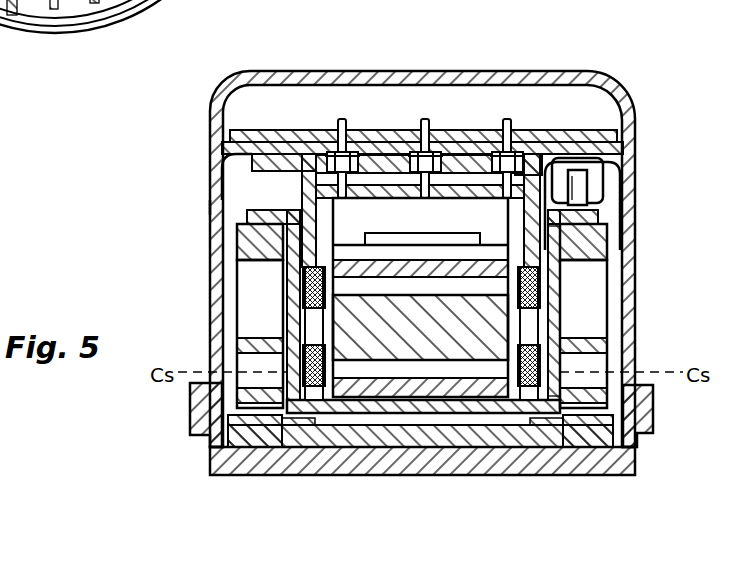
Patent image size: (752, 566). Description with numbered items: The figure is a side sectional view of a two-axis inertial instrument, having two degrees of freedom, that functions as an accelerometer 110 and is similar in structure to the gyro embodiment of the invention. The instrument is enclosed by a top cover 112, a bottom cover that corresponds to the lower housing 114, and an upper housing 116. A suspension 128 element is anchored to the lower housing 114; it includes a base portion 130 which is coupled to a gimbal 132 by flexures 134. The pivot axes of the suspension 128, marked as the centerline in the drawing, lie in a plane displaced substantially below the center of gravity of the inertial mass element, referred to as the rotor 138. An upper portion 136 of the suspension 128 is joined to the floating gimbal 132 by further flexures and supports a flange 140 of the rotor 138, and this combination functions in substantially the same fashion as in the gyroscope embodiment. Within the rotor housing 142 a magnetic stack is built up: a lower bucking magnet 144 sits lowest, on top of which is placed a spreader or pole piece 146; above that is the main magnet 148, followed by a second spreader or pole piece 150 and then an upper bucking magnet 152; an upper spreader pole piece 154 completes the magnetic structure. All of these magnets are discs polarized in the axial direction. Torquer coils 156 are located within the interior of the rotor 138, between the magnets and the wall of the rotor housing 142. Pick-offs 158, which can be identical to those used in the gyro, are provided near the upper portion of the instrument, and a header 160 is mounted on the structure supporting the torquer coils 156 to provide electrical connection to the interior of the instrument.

The accelerometer 110 is at (526, 48).
The top cover 112 is at (413, 40).
The lower housing 114 is at (522, 462).
The upper housing 116 is at (222, 207).
The suspension 128 is at (622, 432).
The base portion 130 is at (578, 410).
The gimbal 132 is at (240, 312).
The flexures 134 is at (245, 365).
The upper portion 136 is at (585, 280).
The rotor 138 is at (553, 312).
The flange 140 is at (632, 190).
The rotor housing 142 is at (560, 247).
The lower bucking magnet 144 is at (453, 387).
The spreader or pole piece 146 is at (402, 372).
The main magnet 148 is at (390, 308).
The second spreader or pole piece 150 is at (340, 285).
The upper bucking magnet 152 is at (345, 266).
The upper spreader pole piece 154 is at (360, 252).
The torquer coils 156 is at (315, 387).
The pick-offs 158 is at (567, 167).
The header 160 is at (457, 162).